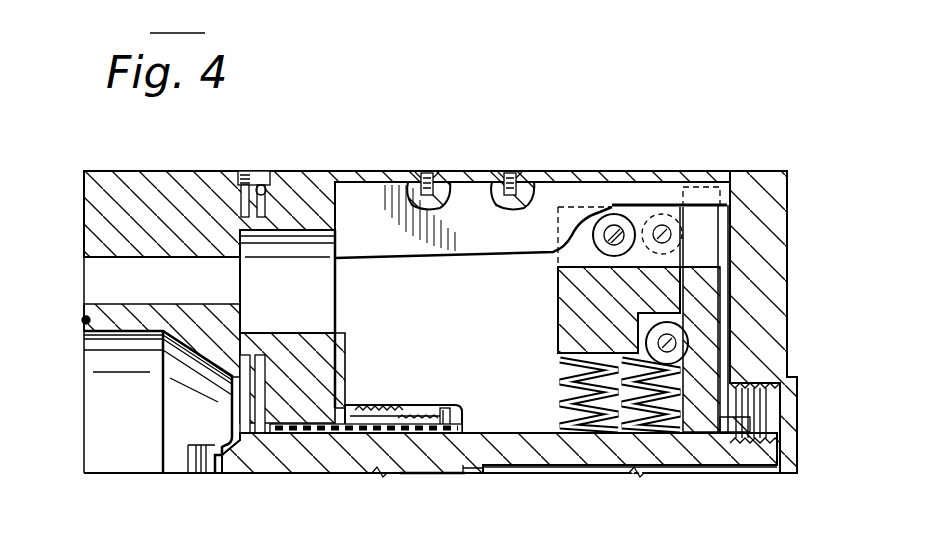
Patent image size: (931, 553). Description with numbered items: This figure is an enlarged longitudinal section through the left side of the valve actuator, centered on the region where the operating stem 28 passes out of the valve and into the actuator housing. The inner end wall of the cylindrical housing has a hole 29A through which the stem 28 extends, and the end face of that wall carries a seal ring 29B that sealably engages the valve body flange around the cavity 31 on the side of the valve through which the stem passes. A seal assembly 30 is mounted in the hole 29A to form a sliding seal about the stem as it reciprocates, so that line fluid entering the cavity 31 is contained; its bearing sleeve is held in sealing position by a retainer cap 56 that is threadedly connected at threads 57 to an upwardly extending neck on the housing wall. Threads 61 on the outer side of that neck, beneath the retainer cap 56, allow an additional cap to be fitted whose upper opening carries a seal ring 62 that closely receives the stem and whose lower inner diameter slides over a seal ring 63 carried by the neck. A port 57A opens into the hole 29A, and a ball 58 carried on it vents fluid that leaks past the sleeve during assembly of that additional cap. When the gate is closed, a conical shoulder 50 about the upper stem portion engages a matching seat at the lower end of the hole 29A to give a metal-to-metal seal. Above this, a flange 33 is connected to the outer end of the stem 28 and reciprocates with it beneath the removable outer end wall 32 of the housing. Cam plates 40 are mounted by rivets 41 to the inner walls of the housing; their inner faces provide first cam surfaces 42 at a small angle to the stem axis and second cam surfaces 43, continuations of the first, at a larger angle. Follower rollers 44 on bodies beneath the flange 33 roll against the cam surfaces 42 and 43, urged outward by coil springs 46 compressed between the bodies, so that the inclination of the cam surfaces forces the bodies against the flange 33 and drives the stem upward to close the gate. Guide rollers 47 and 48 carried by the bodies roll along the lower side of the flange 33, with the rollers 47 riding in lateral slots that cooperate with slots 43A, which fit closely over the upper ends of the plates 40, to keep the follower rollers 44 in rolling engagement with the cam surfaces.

The operating stem 28 is at (518, 453).
The hole 29A is at (248, 473).
The seal ring 29B is at (82, 320).
The seal assembly 30 is at (415, 403).
The cavity 31 is at (137, 438).
The end wall 32 is at (790, 290).
The flange 33 is at (720, 277).
The plates 40 is at (360, 190).
The rivets 41 is at (510, 172).
The first cam surfaces 42 is at (398, 258).
The second cam surfaces 43 is at (557, 255).
The slots 43A is at (706, 232).
The rollers 44 is at (615, 215).
The coil springs 46 is at (560, 392).
The guide rollers 47 is at (680, 340).
The guide rollers 48 is at (660, 214).
The conical shoulder 50 is at (240, 437).
The retainer cap 56 is at (455, 420).
The threads 57 is at (430, 406).
The port 57A is at (265, 378).
The ball 58 is at (258, 170).
The threads 61 is at (375, 403).
The seal ring 62 is at (435, 473).
The seal ring 63 is at (327, 473).